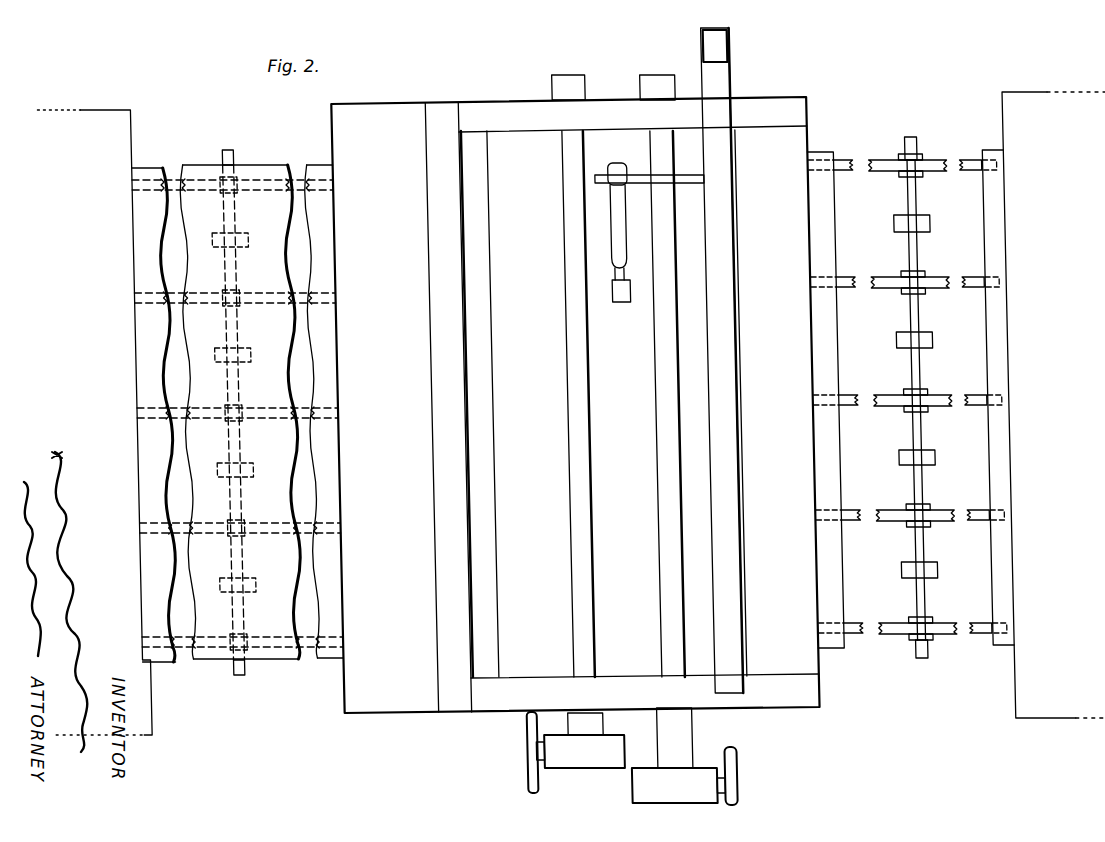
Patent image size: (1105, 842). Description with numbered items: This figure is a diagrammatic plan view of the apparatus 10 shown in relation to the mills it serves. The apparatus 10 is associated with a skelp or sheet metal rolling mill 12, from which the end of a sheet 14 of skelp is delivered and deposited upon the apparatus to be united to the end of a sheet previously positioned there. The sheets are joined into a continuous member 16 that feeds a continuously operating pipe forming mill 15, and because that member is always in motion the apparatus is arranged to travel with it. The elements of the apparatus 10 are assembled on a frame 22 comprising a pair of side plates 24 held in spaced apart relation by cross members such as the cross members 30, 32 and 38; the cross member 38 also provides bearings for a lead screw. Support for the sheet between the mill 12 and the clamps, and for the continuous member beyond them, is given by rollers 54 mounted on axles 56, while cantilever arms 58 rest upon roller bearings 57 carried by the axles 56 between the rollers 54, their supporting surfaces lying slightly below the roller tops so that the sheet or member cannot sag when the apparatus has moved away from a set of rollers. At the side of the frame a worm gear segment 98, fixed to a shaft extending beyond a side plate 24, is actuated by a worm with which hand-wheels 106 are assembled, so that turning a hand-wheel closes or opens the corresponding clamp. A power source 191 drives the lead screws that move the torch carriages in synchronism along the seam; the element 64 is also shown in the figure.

The apparatus 10 is at (588, 394).
The sheet metal rolling mill 12 is at (997, 650).
The sheet 14 is at (978, 563).
The pipe forming mill 15 is at (136, 128).
The continuous member 16 is at (152, 658).
The frame 22 is at (752, 714).
The side plates 24 is at (638, 406).
The cross member 30 is at (562, 466).
The cross member 32 is at (648, 541).
The cross member 38 is at (719, 512).
The rollers 54 is at (241, 233).
The axles 56 is at (229, 151).
The roller bearings 57 is at (231, 407).
The cantilever arms 58 is at (163, 405).
The cutting tool 64 is at (609, 304).
The worm gear segment 98 is at (626, 768).
The hand-wheels 106 is at (511, 785).
The power source 191 is at (715, 46).